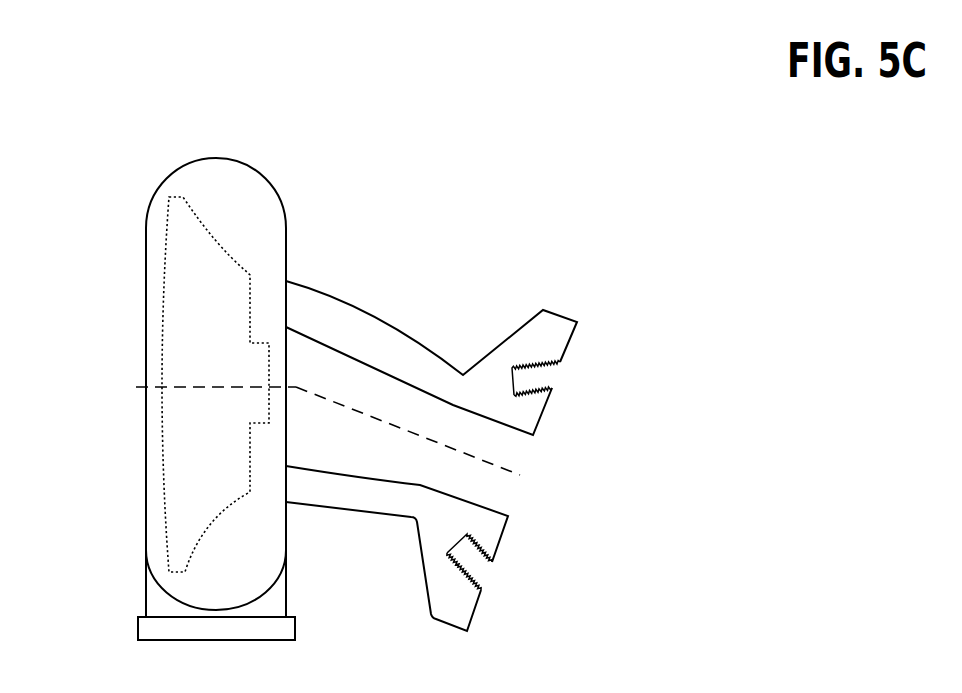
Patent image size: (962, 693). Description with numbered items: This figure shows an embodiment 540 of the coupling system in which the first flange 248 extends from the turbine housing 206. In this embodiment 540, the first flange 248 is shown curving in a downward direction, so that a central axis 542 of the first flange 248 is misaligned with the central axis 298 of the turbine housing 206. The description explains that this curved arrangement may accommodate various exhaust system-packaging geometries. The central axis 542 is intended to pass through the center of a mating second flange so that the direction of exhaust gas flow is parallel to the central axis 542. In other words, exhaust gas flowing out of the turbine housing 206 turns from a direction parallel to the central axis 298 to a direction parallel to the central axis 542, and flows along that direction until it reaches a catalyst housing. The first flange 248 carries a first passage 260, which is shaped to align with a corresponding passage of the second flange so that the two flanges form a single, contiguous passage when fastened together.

The turbine housing 206 is at (170, 177).
The embodiment of the first flange 540 is at (608, 132).
The central axis 298 is at (137, 387).
The central axis of the first flange 542 is at (333, 400).
The first flange 248 is at (493, 352).
The first passage 260 is at (535, 364).